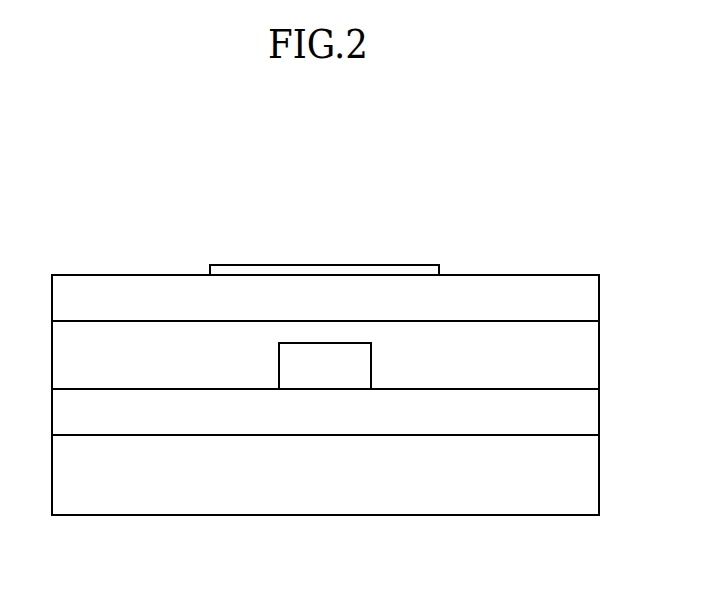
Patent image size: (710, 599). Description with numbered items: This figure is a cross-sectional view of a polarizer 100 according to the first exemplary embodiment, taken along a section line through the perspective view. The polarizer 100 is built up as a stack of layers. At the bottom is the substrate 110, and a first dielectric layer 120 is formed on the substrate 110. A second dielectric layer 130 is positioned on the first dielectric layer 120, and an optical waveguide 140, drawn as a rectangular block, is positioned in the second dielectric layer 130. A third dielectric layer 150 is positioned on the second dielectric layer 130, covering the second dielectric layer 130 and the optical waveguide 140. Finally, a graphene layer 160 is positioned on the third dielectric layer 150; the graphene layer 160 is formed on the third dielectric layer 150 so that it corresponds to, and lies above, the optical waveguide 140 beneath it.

The polarizer 100 is at (472, 228).
The substrate 110 is at (588, 475).
The first dielectric layer 120 is at (588, 413).
The second dielectric layer 130 is at (588, 360).
The optical waveguide 140 is at (333, 367).
The third dielectric layer 150 is at (588, 299).
The graphene layer 160 is at (255, 272).